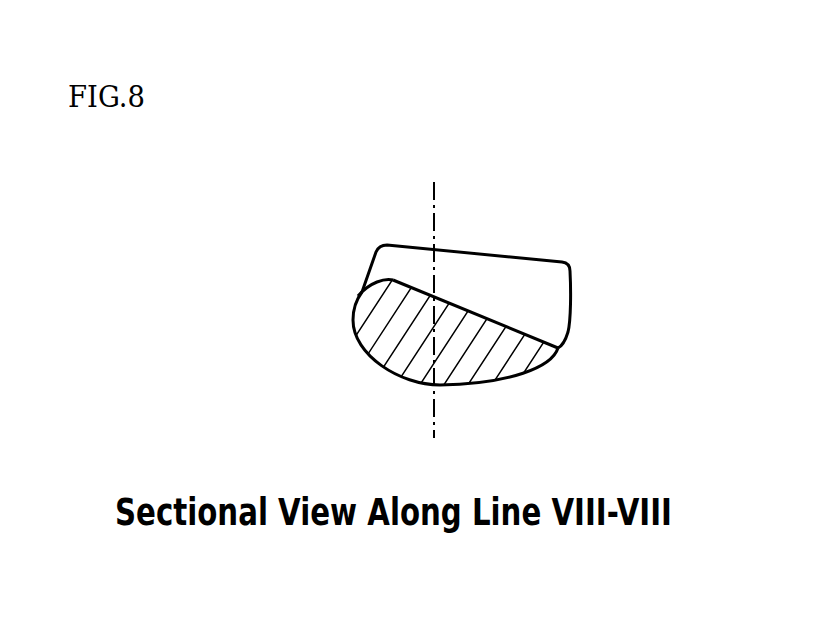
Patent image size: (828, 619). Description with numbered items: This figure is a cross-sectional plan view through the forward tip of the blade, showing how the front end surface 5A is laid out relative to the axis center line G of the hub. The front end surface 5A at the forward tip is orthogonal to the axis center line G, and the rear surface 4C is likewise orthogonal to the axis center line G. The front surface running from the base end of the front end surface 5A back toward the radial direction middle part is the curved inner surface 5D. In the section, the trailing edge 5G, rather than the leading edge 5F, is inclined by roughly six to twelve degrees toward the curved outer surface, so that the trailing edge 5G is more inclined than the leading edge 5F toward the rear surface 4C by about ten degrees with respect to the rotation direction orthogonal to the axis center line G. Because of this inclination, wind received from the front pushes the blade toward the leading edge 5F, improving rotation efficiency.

The axis center line G is at (436, 288).
The front end surface 5A is at (478, 252).
The curved inner surface 5D is at (515, 288).
The leading edge 5F is at (375, 259).
The trailing edge 5G is at (572, 290).
The rear surface 4C is at (387, 357).